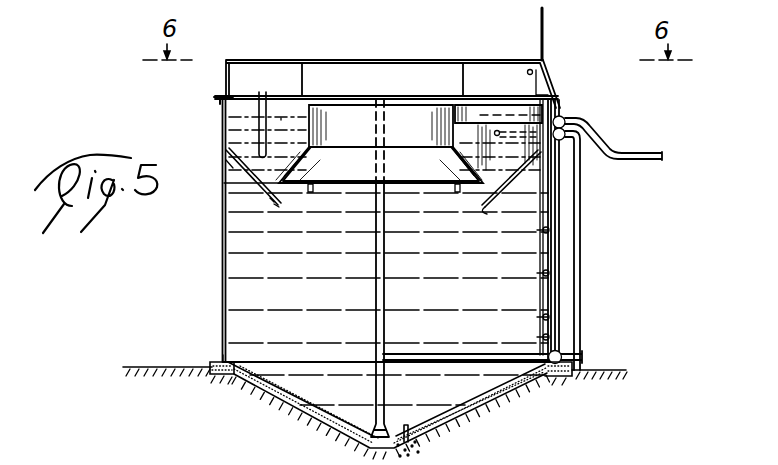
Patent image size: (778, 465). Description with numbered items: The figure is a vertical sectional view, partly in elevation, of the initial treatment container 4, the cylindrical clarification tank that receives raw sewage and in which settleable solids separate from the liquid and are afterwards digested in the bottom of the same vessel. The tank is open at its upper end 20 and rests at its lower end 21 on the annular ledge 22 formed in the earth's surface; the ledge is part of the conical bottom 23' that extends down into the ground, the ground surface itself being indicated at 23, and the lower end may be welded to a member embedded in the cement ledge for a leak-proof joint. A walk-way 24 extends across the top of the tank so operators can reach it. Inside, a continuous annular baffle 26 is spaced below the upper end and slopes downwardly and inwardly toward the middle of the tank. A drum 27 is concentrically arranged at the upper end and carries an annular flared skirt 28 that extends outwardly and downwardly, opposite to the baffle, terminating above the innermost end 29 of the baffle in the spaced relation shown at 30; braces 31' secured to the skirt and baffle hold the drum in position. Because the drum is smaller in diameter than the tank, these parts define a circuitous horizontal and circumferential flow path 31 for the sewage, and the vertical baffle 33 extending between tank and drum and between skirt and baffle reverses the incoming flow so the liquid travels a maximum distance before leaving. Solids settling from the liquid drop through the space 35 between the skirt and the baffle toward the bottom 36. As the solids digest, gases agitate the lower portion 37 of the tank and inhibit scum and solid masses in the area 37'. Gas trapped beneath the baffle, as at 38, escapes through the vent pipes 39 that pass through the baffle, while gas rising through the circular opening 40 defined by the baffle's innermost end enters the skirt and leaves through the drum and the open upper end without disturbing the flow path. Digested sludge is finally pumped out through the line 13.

The initial treatment container 4 is at (222, 248).
The line 13 is at (575, 352).
The upper end 20 is at (238, 97).
The lower end 21 is at (220, 355).
The annular ledge 22 is at (210, 365).
The ground 23 is at (353, 349).
The conical bottom 23' is at (342, 439).
The walk-way 24 is at (313, 98).
The annular baffle 26 is at (265, 187).
The drum 27 is at (366, 133).
The flared skirt 28 is at (366, 171).
The innermost end 29 is at (273, 208).
The spaced relation 30 is at (225, 183).
The flow path 31 is at (284, 96).
The braces 31' is at (314, 231).
The vertical baffle 33 is at (479, 146).
The space 35 is at (273, 201).
The bottom 36 is at (361, 396).
The lower portion 37 is at (516, 268).
The area 37' is at (482, 327).
The trapped gas region 38 is at (528, 188).
The vent pipes 39 is at (262, 95).
The circular opening 40 is at (486, 208).